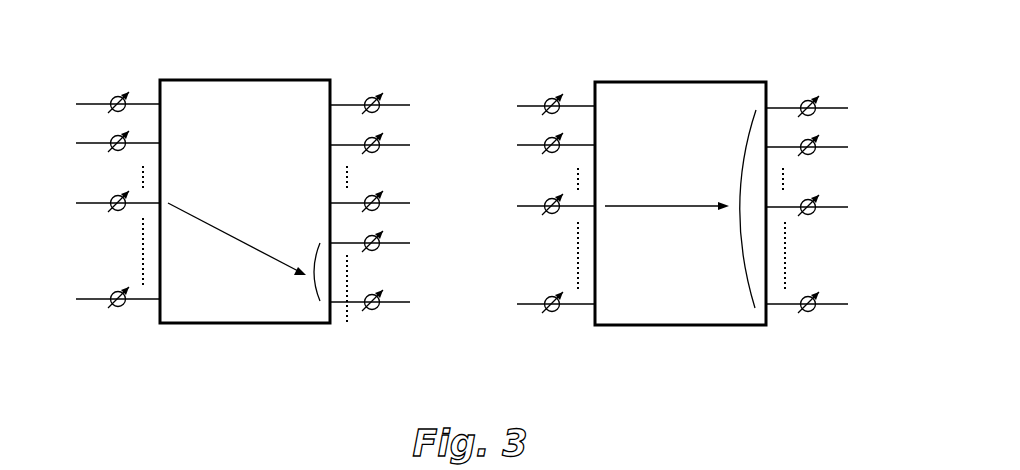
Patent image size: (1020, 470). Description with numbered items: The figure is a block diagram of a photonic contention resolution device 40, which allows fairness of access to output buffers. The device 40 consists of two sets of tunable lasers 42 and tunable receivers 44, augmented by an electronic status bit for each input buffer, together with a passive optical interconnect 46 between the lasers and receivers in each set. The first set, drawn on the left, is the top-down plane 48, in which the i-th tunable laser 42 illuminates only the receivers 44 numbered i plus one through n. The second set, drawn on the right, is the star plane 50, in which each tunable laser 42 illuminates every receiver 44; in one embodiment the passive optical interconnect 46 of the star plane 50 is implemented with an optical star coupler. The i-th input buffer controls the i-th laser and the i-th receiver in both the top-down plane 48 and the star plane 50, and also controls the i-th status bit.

The photonic contention resolution device 40 is at (208, 410).
The tunable lasers 42 is at (109, 96).
The tunable receivers 44 is at (382, 93).
The passive optical interconnect 46 is at (297, 330).
The top-down plane 48 is at (168, 68).
The star plane 50 is at (734, 70).